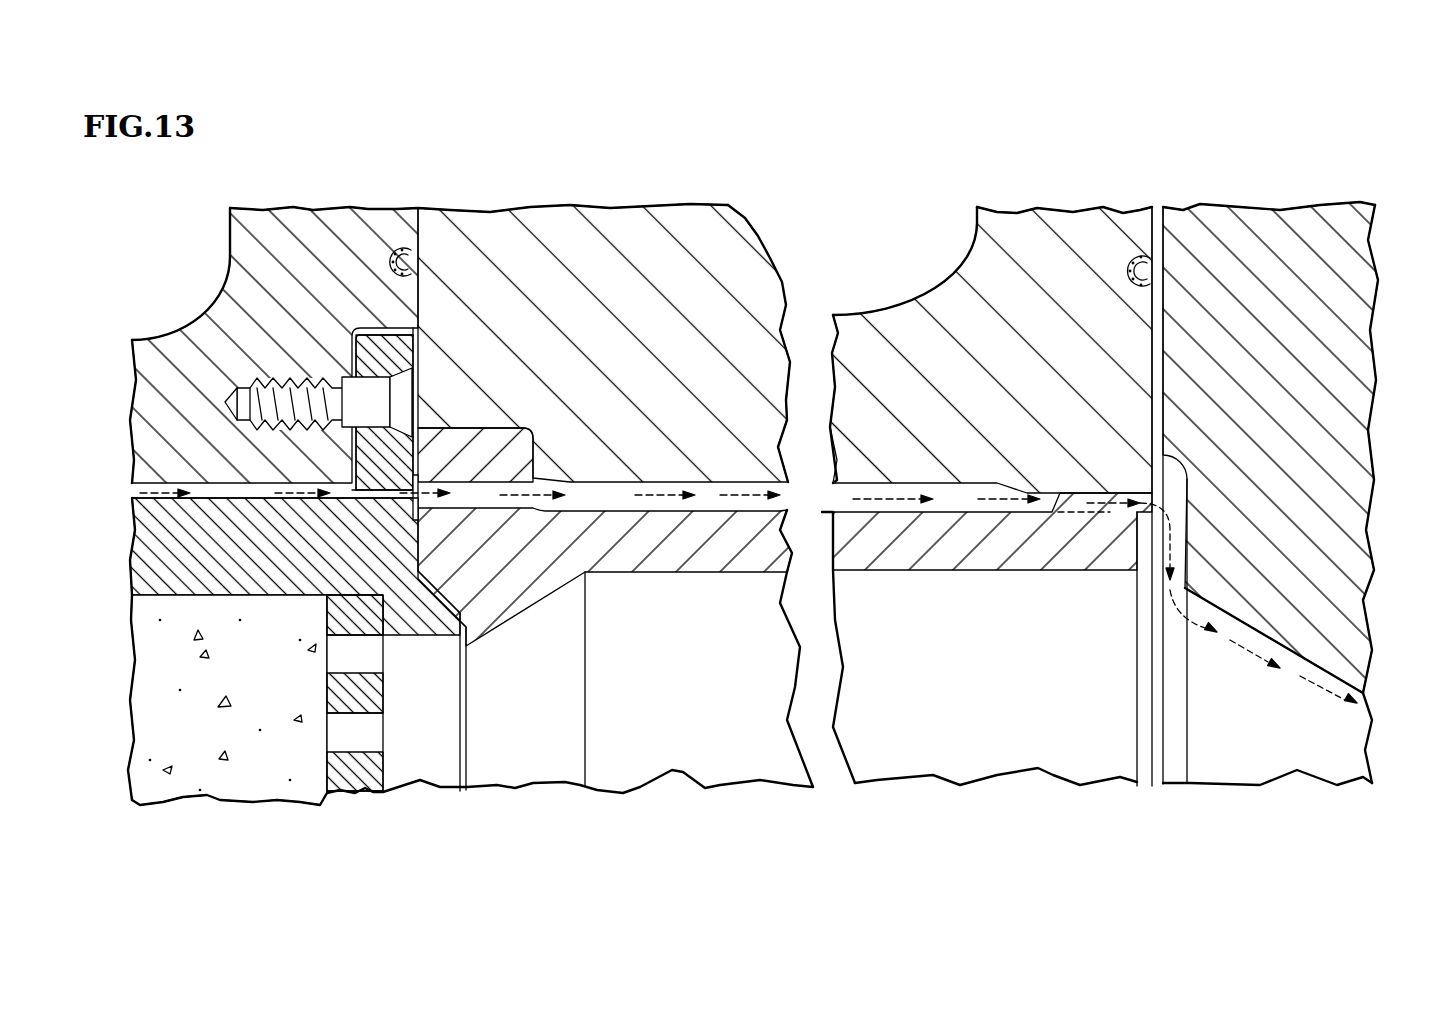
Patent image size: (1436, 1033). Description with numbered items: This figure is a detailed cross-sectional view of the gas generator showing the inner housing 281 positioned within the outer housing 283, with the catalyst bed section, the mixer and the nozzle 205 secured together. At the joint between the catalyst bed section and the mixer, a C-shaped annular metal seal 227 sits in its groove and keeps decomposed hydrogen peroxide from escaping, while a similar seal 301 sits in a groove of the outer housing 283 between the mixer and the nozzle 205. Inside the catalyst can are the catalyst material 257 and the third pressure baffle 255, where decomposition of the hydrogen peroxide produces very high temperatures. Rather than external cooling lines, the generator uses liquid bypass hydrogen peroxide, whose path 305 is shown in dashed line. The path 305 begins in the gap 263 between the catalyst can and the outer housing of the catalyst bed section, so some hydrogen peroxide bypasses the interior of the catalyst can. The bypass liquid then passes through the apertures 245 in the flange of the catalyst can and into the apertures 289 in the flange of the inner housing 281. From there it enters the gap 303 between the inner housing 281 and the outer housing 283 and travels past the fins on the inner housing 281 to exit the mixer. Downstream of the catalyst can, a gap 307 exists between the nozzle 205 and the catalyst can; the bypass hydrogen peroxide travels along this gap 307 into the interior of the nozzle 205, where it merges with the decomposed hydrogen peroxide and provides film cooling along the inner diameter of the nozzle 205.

The nozzle 205 is at (1325, 362).
The annular metal seal 227 is at (399, 240).
The apertures 245 is at (375, 493).
The third pressure baffle 255 is at (373, 773).
The catalyst material 257 is at (268, 683).
The gap 263 is at (216, 486).
The inner housing 281 is at (995, 557).
The outer housing 283 is at (897, 333).
The apertures 289 is at (476, 508).
The seal 301 is at (1130, 248).
The gap 303 is at (934, 506).
The path 305 is at (1253, 648).
The gap 307 is at (1170, 640).